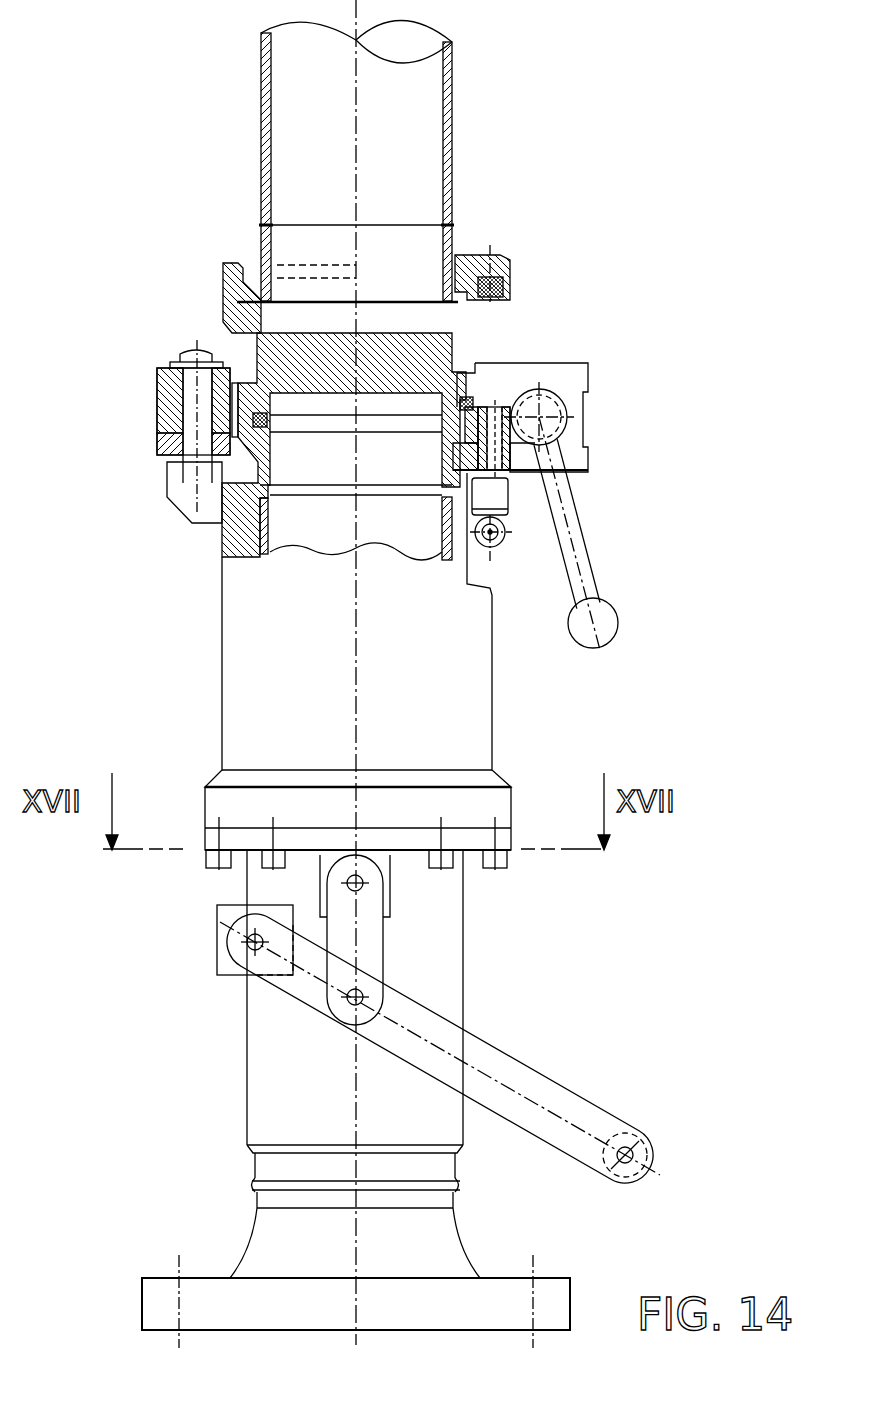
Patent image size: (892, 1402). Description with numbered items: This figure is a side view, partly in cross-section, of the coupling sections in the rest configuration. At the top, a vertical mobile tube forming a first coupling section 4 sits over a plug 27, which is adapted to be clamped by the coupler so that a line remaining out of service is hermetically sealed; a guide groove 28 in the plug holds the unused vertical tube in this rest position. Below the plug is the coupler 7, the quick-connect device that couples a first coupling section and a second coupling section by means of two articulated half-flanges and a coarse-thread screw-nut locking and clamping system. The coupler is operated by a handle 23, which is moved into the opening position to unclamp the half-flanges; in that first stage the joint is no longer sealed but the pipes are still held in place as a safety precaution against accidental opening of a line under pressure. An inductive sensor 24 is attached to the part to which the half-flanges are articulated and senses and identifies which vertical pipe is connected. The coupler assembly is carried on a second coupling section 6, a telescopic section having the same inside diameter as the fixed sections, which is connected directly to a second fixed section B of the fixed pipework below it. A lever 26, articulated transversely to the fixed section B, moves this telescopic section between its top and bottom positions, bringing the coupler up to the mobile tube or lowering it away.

The first coupling section 4 is at (452, 125).
The guide groove 28 is at (237, 298).
The plug 27 is at (462, 356).
The coupler 7 is at (595, 375).
The handle 23 is at (587, 532).
The inductive sensor 24 is at (512, 500).
The second coupling section 6 is at (222, 643).
The second fixed section B is at (247, 1060).
The lever 26 is at (595, 1103).